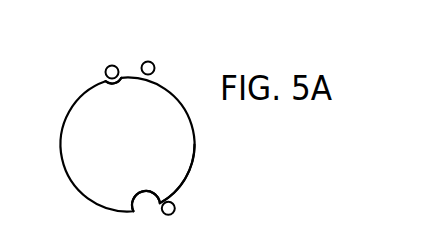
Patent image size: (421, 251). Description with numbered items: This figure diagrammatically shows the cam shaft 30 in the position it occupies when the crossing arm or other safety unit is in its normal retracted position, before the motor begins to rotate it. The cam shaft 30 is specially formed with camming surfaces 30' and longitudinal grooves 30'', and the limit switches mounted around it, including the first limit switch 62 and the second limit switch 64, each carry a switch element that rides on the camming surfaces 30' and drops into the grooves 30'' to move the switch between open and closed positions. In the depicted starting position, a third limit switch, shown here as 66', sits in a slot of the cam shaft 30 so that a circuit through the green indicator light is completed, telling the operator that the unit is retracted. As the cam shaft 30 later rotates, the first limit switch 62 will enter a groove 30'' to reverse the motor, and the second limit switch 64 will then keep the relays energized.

The cam shaft 30 is at (156, 144).
The camming surfaces 30' is at (210, 174).
The longitudinal grooves 30'' is at (138, 220).
The first limit switch 62 is at (154, 63).
The second limit switch 64 is at (174, 212).
The third pin 66' is at (115, 47).